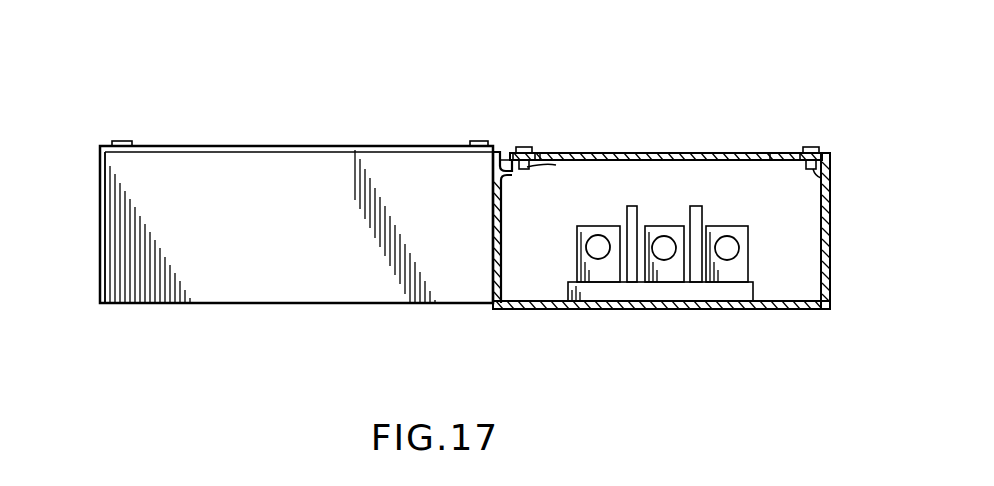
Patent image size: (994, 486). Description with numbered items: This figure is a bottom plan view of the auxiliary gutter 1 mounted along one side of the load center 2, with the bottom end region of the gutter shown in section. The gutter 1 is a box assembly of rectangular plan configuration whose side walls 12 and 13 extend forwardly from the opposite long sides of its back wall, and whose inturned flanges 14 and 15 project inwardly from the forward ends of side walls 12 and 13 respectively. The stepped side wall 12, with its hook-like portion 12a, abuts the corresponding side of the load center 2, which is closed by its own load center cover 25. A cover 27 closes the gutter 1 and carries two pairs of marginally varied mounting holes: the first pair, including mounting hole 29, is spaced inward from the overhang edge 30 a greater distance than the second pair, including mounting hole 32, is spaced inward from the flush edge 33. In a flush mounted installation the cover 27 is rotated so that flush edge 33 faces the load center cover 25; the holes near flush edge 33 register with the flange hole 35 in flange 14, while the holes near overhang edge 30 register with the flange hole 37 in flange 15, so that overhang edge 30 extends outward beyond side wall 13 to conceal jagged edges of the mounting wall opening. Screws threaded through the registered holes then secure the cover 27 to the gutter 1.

The auxiliary gutter 1 is at (693, 314).
The load center 2 is at (255, 309).
The side wall 12 is at (501, 247).
The hook portion of side wall 12a is at (493, 168).
The side wall 13 is at (831, 193).
The inturned flange 14 is at (565, 152).
The inturned flange 15 is at (770, 155).
The load center cover 25 is at (247, 146).
The cover 27 is at (667, 155).
The mounting hole 29 is at (525, 150).
The overhang edge 30 is at (496, 150).
The mounting hole 32 is at (810, 150).
The flush edge 33 is at (832, 157).
The flange hole 35 is at (527, 167).
The flange hole 37 is at (813, 170).